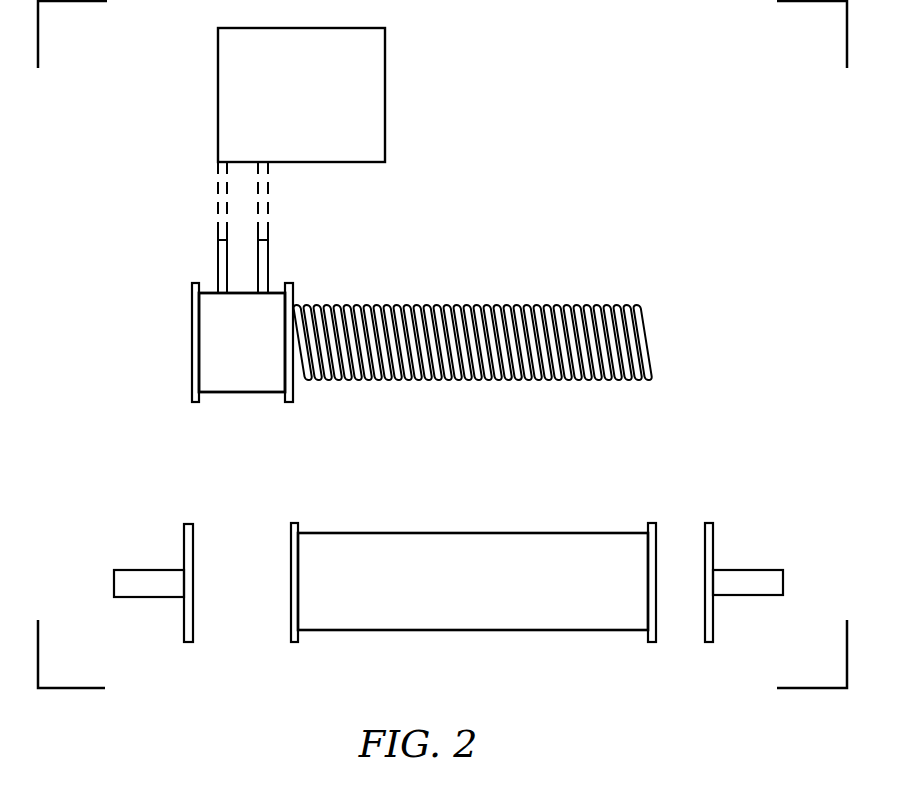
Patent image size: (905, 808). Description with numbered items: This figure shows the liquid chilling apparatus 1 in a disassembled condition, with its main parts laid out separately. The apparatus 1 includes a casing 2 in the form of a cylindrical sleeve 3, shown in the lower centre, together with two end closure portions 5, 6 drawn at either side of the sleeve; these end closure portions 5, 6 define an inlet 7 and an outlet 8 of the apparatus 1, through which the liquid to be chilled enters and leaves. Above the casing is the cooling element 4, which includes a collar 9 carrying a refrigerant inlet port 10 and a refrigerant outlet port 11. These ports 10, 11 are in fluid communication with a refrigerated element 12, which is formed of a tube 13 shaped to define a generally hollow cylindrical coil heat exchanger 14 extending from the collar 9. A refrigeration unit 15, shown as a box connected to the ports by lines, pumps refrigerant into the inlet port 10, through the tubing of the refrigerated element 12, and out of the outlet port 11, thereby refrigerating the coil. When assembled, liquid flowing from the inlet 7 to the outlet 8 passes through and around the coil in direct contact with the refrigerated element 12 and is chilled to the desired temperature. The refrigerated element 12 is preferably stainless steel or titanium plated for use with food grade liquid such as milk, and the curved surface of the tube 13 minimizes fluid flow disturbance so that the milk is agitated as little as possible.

The apparatus 1 is at (586, 189).
The casing 2 is at (343, 630).
The cylindrical sleeve 3 is at (493, 630).
The cooling element 4 is at (270, 392).
The end closure portion 5 is at (184, 625).
The end closure portion 6 is at (713, 633).
The inlet 7 is at (114, 587).
The outlet 8 is at (783, 577).
The collar 9 is at (238, 383).
The refrigerant inlet port 10 is at (217, 257).
The refrigerant outlet port 11 is at (268, 250).
The refrigerated element 12 is at (392, 305).
The tube 13 is at (513, 305).
The coil heat exchanger 14 is at (600, 305).
The refrigeration unit 15 is at (385, 100).